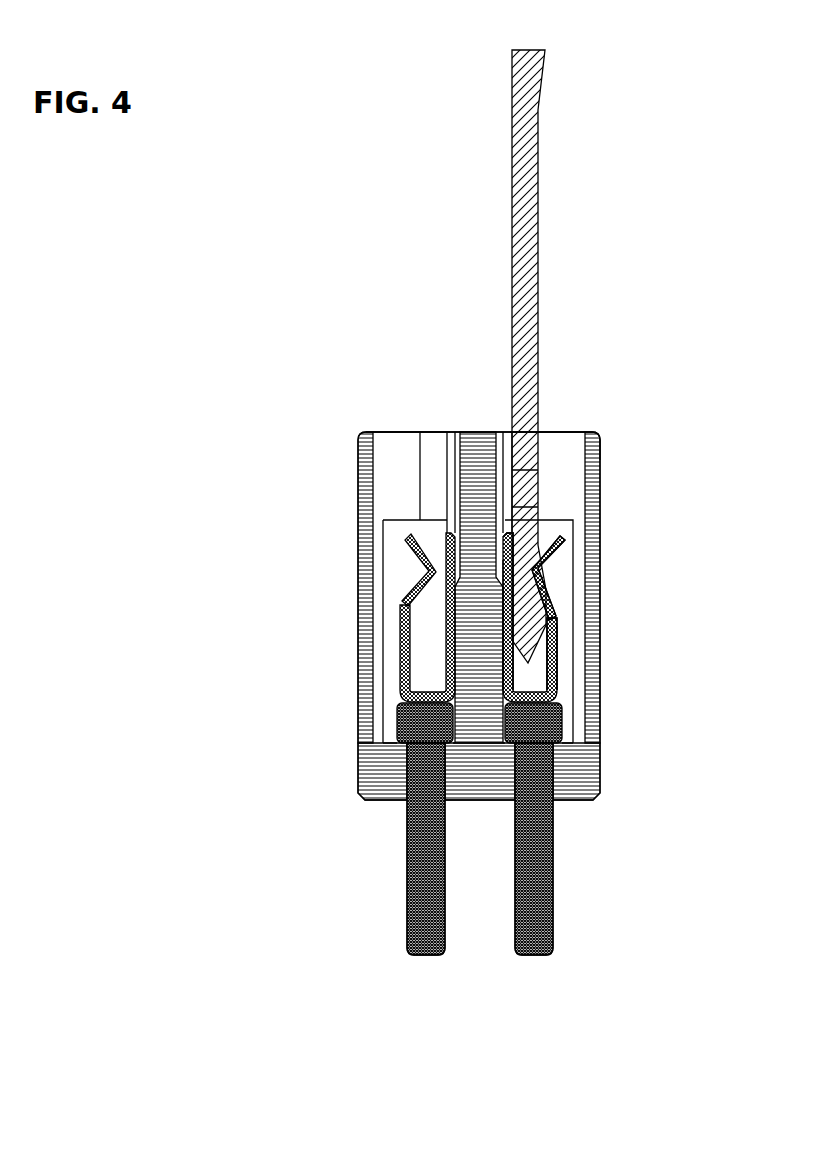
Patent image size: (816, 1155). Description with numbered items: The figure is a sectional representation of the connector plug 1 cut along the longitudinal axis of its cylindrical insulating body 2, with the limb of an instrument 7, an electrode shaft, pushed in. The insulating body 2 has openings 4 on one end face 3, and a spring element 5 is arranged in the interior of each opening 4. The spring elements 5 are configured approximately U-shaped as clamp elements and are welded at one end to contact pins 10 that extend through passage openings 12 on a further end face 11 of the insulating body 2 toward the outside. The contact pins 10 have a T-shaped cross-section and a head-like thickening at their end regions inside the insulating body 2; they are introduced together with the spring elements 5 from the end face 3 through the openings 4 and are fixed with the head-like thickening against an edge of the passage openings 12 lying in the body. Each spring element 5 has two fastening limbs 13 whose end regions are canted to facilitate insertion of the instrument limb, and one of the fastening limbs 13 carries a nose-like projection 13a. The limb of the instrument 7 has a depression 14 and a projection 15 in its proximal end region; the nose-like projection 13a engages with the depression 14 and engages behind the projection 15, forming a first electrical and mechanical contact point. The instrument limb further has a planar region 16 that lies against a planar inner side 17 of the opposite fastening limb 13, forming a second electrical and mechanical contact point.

The connector plug 1 is at (325, 338).
The insulating body 2 is at (362, 783).
The end face 3 is at (578, 430).
The openings 4 is at (555, 446).
The spring element 5 is at (375, 703).
The instrument 7 is at (530, 185).
The contact pins 10 is at (425, 953).
The further end face 11 is at (383, 803).
The passage openings 12 is at (560, 805).
The fastening limbs 13 is at (545, 555).
The nose-like projection 13a is at (420, 572).
The depression 14 is at (532, 515).
The projection 15 is at (548, 622).
The planar region 16 is at (552, 650).
The planar inner side 17 is at (447, 633).